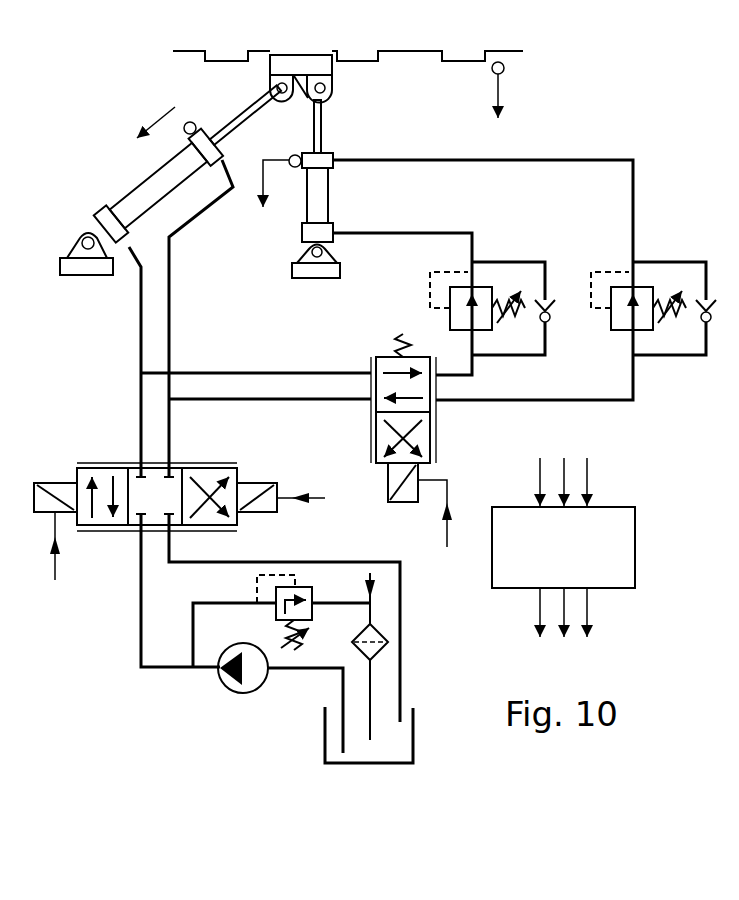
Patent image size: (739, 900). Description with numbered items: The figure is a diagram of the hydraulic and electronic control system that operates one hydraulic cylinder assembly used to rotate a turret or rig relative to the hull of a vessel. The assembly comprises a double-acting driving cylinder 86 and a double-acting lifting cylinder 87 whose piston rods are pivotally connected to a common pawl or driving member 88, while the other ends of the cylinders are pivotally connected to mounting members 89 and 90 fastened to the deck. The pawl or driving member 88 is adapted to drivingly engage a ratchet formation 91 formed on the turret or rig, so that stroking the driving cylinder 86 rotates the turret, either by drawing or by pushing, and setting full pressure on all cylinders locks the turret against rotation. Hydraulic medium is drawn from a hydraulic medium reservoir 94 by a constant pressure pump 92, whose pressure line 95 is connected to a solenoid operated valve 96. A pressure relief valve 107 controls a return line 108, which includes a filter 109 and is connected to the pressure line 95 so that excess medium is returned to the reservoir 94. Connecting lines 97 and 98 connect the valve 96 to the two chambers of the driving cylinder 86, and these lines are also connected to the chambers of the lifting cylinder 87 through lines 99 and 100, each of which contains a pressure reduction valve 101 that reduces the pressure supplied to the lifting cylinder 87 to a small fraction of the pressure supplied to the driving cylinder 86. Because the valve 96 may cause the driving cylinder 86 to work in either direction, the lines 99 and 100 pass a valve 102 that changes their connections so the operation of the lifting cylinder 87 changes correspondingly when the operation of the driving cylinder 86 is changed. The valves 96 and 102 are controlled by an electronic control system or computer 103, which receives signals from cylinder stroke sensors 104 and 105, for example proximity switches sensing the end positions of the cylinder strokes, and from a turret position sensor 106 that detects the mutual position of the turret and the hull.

The driving cylinder 86 is at (140, 182).
The lifting cylinder 87 is at (329, 195).
The pawl or driving member 88 is at (299, 57).
The mounting member 89 is at (83, 275).
The mounting member 90 is at (338, 262).
The ratchet formation 91 is at (372, 60).
The constant pressure pump 92 is at (234, 693).
The hydraulic medium reservoir 94 is at (414, 733).
The pressure line 95 is at (138, 621).
The solenoid operated valve 96 is at (106, 526).
The connecting line 97 is at (140, 411).
The connecting line 98 is at (172, 301).
The line 99 is at (416, 233).
The line 100 is at (517, 160).
The pressure reduction valve 101 is at (490, 286).
The valve 102 is at (436, 432).
The electronic control system or computer 103 is at (636, 548).
The cylinder stroke sensor 104 is at (191, 121).
The cylinder stroke sensor 105 is at (294, 155).
The turret position sensor 106 is at (505, 68).
The pressure relief valve 107 is at (305, 586).
The return line 108 is at (212, 603).
The filter 109 is at (390, 645).